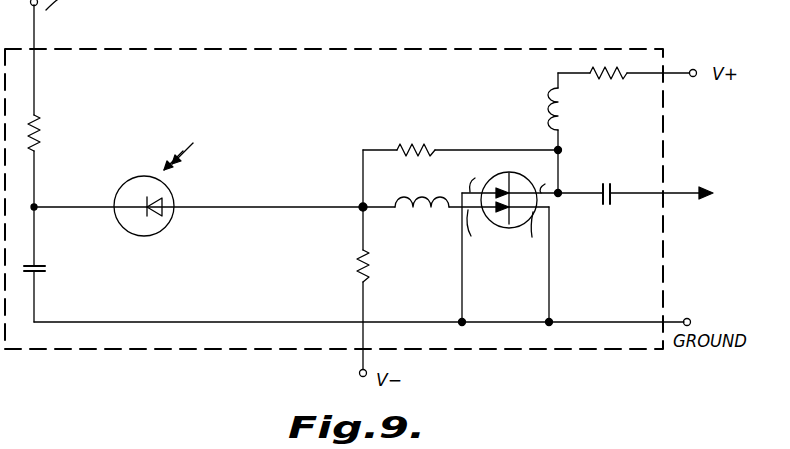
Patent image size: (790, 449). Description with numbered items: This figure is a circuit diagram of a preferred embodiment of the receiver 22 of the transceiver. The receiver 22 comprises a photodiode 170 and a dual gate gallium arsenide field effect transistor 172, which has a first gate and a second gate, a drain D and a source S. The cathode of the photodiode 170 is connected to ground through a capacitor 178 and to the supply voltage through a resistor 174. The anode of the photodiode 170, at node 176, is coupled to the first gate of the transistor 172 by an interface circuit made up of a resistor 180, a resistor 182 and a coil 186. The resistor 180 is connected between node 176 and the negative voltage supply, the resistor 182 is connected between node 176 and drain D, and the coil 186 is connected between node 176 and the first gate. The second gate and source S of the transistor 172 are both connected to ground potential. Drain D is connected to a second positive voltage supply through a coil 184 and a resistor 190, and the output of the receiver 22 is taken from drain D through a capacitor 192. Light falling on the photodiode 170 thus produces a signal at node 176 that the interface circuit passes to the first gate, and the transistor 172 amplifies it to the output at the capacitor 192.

The receiver 22 is at (343, 49).
The resistor 174 is at (67, 132).
The capacitor 178 is at (41, 264).
The photodiode 170 is at (141, 236).
The node 176 is at (360, 205).
The resistor 182 is at (413, 142).
The coil 186 is at (430, 198).
The resistor 180 is at (370, 275).
The coil 184 is at (550, 120).
The resistor 190 is at (608, 80).
The capacitor 192 is at (610, 178).
The dual gate gallium arsenide field effect transistor 172 is at (497, 176).